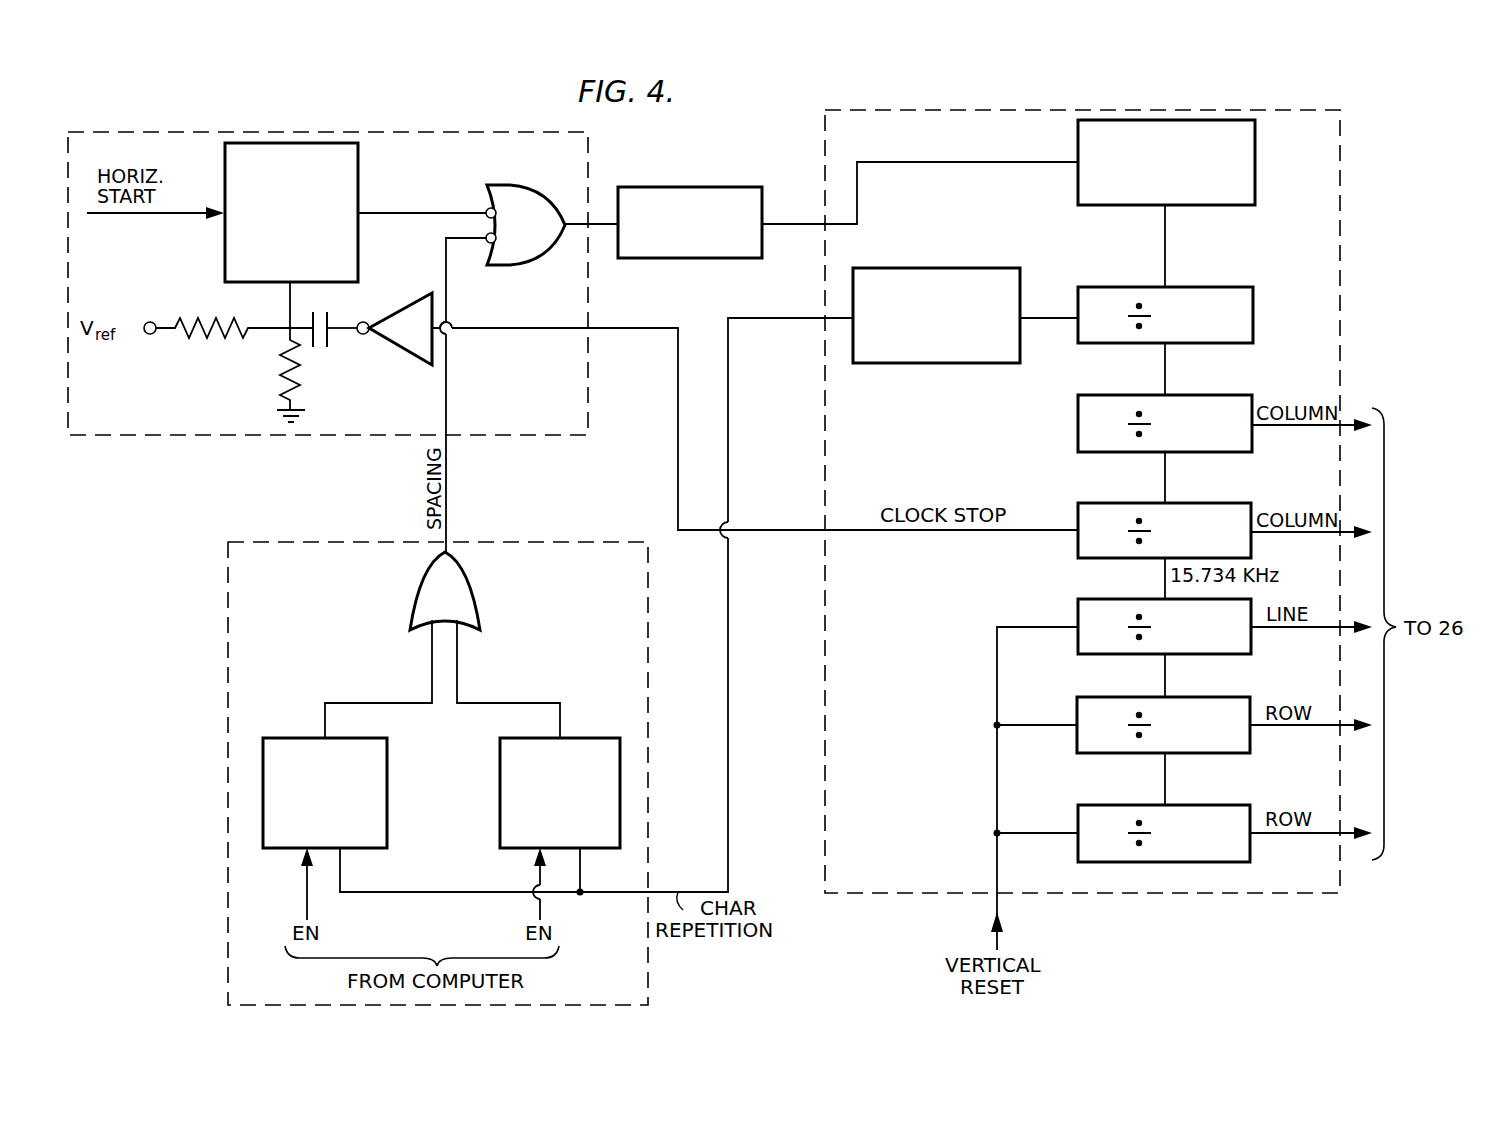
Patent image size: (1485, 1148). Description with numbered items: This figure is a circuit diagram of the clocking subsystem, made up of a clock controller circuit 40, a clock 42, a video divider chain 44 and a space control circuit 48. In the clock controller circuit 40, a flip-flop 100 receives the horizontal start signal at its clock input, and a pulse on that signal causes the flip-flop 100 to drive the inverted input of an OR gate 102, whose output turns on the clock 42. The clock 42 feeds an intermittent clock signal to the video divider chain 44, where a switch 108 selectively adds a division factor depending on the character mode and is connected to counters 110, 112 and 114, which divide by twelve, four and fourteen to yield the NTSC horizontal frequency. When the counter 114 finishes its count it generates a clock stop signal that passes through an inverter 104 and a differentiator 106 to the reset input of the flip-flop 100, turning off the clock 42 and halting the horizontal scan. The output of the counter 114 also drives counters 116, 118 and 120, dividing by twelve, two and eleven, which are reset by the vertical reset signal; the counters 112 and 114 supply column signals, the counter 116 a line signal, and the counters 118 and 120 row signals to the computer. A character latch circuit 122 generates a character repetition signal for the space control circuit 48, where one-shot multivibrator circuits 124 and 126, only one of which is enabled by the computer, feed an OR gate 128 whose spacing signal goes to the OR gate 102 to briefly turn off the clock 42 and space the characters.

The clock controller circuit 40 is at (110, 426).
The clock 42 is at (716, 187).
The video divider chain 44 is at (1340, 886).
The space control circuit 48 is at (227, 770).
The flip-flop 100 is at (358, 168).
The OR gate 102 is at (530, 190).
The inverter 104 is at (396, 362).
The differentiator 106 is at (270, 352).
The switch 108 is at (1252, 170).
The counter 110 is at (1097, 287).
The counter 112 is at (1108, 395).
The counter 114 is at (1110, 503).
The counter 116 is at (1108, 599).
The counter 118 is at (1110, 697).
The counter 120 is at (1117, 805).
The character latch circuit 122 is at (948, 268).
The one-shot multivibrator circuit 124 is at (286, 738).
The one-shot multivibrator circuit 126 is at (587, 738).
The OR gate 128 is at (482, 600).